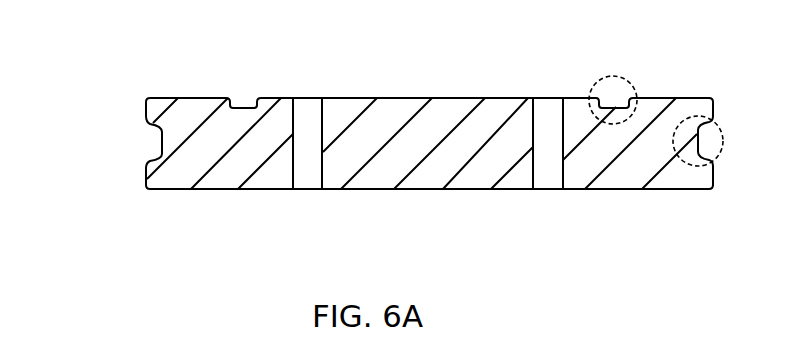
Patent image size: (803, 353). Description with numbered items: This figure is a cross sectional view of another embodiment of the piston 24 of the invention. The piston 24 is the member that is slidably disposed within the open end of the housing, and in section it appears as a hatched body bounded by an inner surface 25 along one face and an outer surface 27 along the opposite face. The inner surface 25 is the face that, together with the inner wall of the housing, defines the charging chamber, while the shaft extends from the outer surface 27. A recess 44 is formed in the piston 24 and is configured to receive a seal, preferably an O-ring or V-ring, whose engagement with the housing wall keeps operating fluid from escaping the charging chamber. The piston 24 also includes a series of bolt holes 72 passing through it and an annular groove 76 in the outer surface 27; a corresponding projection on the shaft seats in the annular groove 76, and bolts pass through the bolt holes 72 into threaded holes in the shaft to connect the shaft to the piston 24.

The piston 24 is at (429, 50).
The inner surface 25 is at (418, 190).
The outer surface 27 is at (194, 97).
The recess 44 is at (148, 145).
The bolt holes 72 is at (313, 104).
The annular groove 76 is at (247, 108).